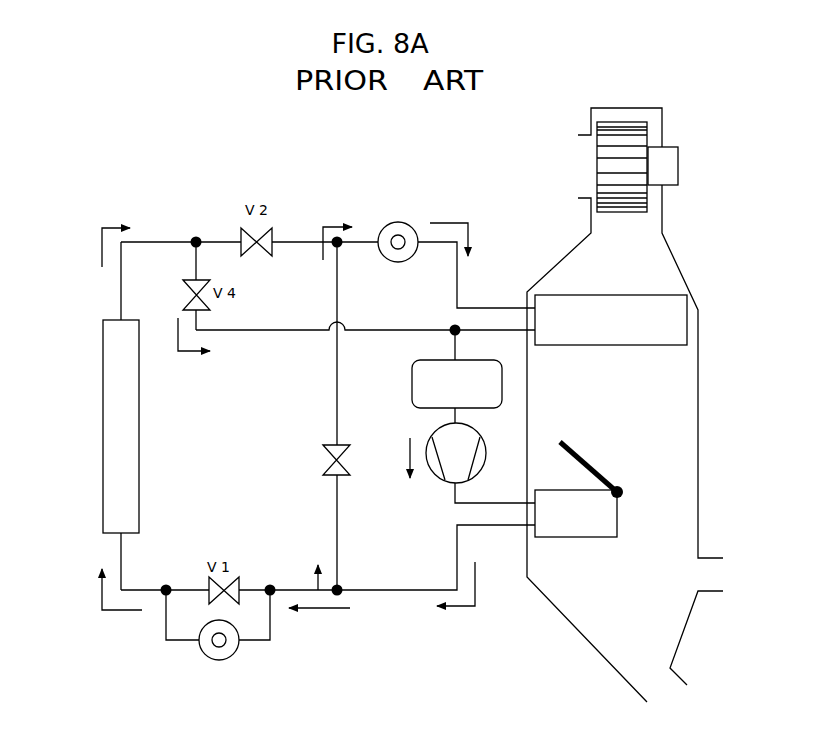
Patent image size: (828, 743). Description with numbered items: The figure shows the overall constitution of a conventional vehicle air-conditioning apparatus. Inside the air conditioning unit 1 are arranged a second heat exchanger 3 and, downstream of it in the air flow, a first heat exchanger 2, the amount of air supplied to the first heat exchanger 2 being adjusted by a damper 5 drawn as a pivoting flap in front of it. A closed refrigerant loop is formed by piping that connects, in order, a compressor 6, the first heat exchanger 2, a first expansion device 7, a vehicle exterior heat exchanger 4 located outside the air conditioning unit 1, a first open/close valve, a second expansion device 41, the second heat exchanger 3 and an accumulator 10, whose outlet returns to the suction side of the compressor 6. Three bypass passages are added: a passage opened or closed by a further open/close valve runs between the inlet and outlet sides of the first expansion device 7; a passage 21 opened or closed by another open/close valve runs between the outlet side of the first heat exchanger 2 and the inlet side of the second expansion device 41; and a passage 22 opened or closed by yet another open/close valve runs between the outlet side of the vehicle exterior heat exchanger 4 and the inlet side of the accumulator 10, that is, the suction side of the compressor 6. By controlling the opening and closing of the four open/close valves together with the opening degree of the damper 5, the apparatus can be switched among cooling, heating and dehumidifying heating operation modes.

The air conditioning unit 1 is at (698, 396).
The first heat exchanger 2 is at (617, 523).
The second heat exchanger 3 is at (687, 328).
The vehicle exterior heat exchanger 4 is at (139, 457).
The damper 5 is at (587, 458).
The compressor 6 is at (478, 437).
The first expansion device 7 is at (235, 652).
The accumulator 10 is at (412, 380).
The first bypass line 21 is at (337, 530).
The second bypass line 22 is at (253, 330).
The second expansion device 41 is at (400, 263).